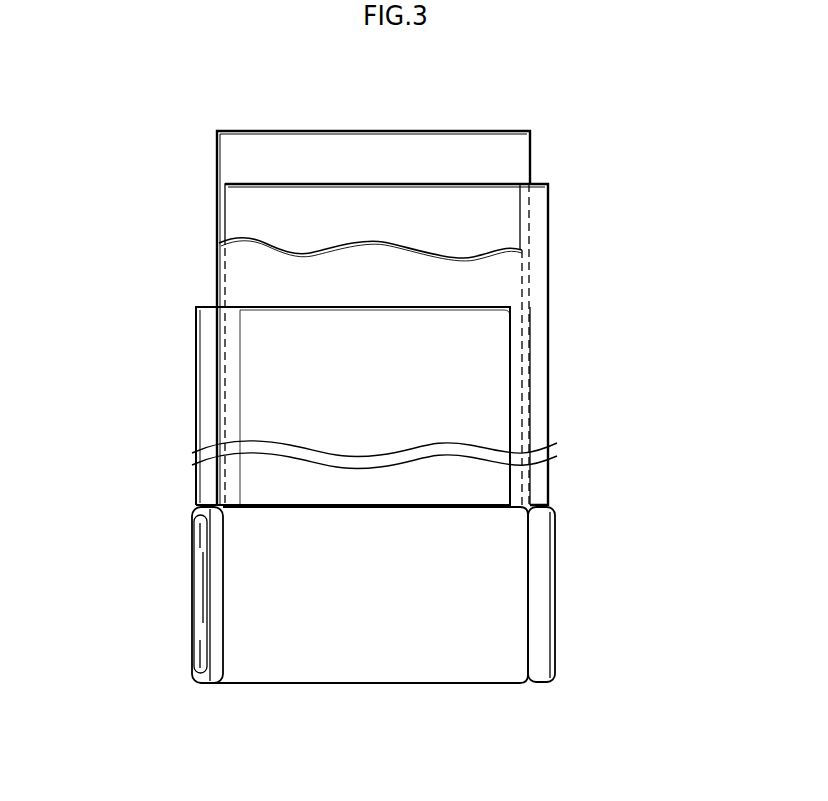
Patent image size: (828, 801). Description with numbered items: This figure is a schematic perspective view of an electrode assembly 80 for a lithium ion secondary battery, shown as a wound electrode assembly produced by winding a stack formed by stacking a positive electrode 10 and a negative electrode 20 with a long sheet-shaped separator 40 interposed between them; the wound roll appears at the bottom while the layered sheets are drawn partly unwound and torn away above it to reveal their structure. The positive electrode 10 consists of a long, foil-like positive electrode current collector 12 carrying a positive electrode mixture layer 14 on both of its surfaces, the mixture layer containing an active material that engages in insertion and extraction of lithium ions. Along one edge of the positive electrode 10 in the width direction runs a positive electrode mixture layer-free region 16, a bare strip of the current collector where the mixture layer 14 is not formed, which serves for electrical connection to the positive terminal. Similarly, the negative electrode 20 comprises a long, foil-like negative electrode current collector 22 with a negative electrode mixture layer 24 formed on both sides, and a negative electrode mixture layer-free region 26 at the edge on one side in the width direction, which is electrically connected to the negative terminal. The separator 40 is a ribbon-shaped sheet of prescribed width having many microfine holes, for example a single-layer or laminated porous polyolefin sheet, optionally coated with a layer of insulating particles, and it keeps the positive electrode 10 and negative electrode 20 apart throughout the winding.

The positive electrode 10 is at (326, 406).
The positive electrode current collector 12 is at (196, 436).
The positive electrode mixture layer 14 is at (252, 326).
The positive electrode mixture layer-free region 16 is at (210, 405).
The negative electrode 20 is at (438, 344).
The negative electrode current collector 22 is at (550, 352).
The negative electrode mixture layer 24 is at (517, 208).
The negative electrode mixture layer-free region 26 is at (538, 322).
The separator 40 is at (237, 151).
The electrode assembly 80 is at (431, 663).